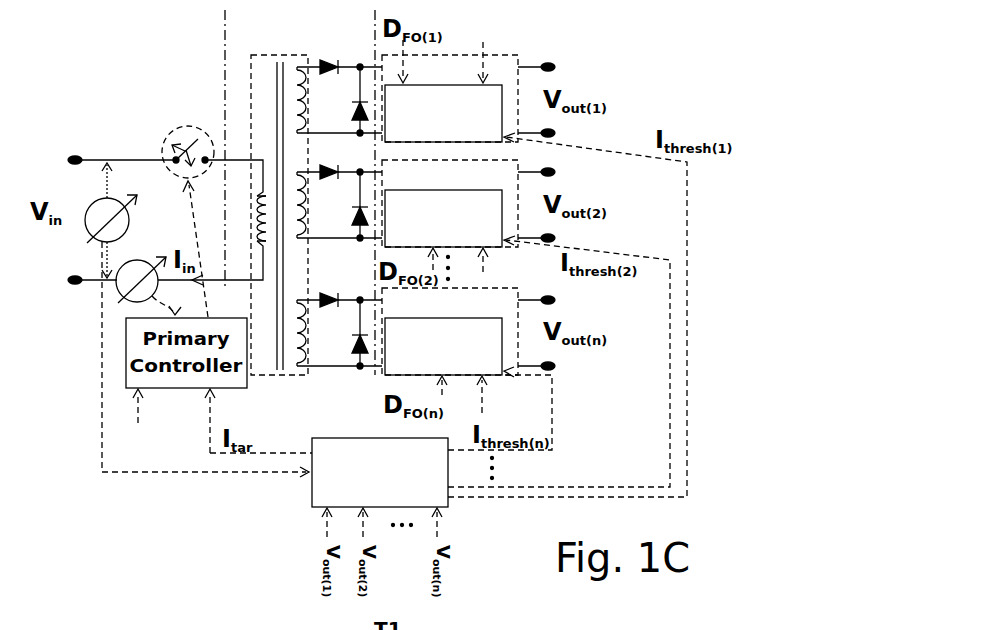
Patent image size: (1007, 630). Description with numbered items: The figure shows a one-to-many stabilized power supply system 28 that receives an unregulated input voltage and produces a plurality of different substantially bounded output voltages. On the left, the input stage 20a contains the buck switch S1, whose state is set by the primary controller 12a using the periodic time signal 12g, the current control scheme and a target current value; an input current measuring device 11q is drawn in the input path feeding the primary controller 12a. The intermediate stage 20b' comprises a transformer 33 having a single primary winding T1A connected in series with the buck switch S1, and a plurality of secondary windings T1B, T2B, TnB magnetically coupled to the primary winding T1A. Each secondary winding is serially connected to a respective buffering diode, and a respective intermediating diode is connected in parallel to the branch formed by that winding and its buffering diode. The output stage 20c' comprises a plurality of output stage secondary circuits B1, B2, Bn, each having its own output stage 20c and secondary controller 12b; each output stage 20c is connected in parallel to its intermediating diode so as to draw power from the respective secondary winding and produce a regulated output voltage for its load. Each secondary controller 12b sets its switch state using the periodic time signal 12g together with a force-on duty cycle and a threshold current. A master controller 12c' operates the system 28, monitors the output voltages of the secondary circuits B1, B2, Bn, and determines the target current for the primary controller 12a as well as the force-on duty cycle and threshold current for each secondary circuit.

The power supply system 28 is at (91, 111).
The input stage 20a is at (178, 128).
The buck switch S1 is at (178, 145).
The intermediate stage 20b' is at (294, 213).
The output stage 20c' is at (450, 191).
The output stage of secondary circuitry 20c is at (443, 217).
The periodic time signal 12g is at (329, 237).
The secondary controller 12b is at (502, 118).
The input current sensor 11q is at (118, 301).
The primary controller 12a is at (126, 353).
The transformer 33 is at (292, 377).
The master controller 12c' is at (339, 488).
The output stage secondary circuit B1 is at (622, 80).
The output stage secondary circuit B2 is at (592, 192).
The output stage secondary circuit Bn is at (578, 315).
The primary winding T1A is at (239, 218).
The secondary winding T1B is at (321, 100).
The secondary winding T2B is at (321, 205).
The secondary winding TnB is at (321, 333).